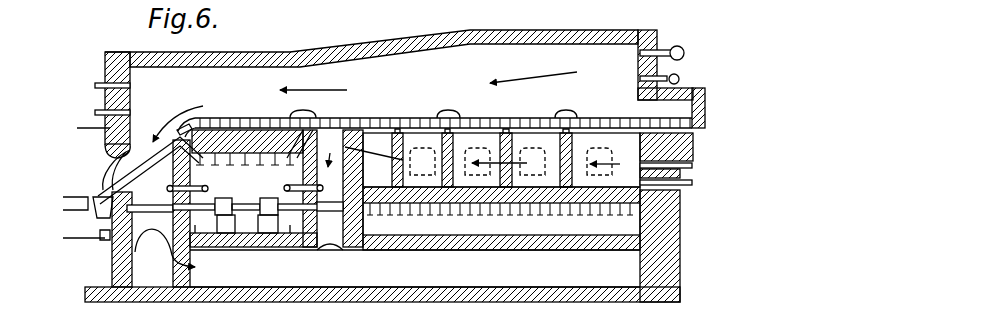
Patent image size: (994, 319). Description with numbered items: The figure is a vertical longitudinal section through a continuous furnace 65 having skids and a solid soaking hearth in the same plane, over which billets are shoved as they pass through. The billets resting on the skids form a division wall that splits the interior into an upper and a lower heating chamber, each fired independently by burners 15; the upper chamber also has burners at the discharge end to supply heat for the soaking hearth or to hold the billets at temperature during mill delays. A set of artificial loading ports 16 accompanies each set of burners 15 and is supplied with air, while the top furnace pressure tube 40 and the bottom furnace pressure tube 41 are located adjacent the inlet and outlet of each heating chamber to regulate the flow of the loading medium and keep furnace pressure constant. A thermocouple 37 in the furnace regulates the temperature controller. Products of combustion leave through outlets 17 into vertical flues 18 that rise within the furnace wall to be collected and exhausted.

The burners 15 is at (95, 112).
The artificial loading ports 16 is at (95, 85).
The outlets 17 is at (176, 165).
The vertical flues 18 is at (402, 278).
The thermocouple 37 is at (163, 84).
The top furnace pressure tube 40 is at (604, 73).
The bottom furnace pressure tube 41 is at (170, 189).
The continuous furnace 65 is at (405, 95).